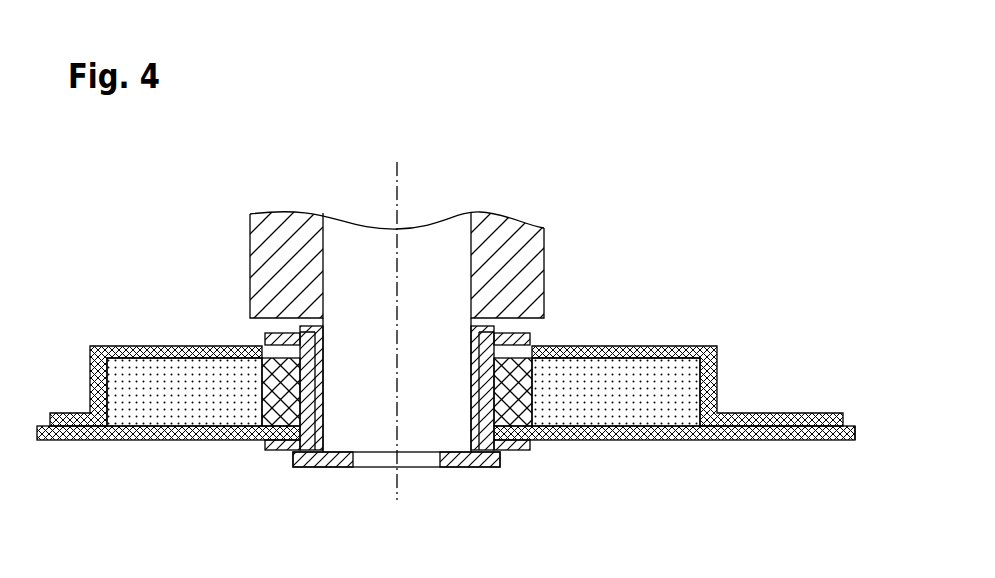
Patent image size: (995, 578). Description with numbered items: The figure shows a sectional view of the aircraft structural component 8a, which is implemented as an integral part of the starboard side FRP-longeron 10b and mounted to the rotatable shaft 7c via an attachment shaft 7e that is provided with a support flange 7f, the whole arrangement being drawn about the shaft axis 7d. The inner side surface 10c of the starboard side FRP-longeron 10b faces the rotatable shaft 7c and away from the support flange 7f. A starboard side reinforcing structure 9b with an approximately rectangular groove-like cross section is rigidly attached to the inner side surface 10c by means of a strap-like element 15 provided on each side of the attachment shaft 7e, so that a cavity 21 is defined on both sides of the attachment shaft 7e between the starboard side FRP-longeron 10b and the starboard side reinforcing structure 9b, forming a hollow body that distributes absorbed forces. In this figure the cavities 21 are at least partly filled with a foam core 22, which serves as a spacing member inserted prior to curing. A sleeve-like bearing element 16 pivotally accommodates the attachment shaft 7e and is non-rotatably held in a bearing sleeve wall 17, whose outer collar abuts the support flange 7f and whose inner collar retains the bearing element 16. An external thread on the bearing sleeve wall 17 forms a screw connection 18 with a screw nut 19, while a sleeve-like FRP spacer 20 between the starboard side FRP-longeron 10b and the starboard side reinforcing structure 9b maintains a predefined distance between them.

The rotatable shaft 7c is at (500, 230).
The shaft axis 7d is at (395, 172).
The attachment shaft 7e is at (438, 232).
The support flange 7f is at (468, 467).
The aircraft structural component 8a is at (629, 250).
The starboard side reinforcing structure 9b is at (681, 347).
The starboard side FRP-longeron 10b is at (687, 440).
The inner side surface 10c is at (856, 420).
The strap-like element 15 is at (64, 413).
The bearing element 16 is at (318, 417).
The bearing sleeve wall 17 is at (310, 450).
The screw connection 18 is at (506, 335).
The screw nut 19 is at (265, 340).
The spacer 20 is at (520, 393).
The cavity 21 is at (197, 378).
The foam core 22 is at (178, 440).